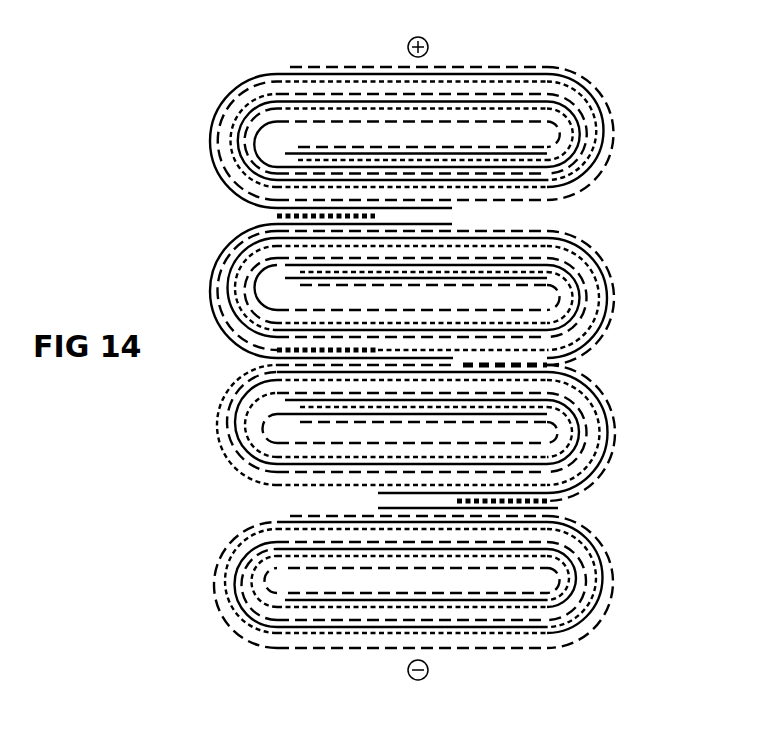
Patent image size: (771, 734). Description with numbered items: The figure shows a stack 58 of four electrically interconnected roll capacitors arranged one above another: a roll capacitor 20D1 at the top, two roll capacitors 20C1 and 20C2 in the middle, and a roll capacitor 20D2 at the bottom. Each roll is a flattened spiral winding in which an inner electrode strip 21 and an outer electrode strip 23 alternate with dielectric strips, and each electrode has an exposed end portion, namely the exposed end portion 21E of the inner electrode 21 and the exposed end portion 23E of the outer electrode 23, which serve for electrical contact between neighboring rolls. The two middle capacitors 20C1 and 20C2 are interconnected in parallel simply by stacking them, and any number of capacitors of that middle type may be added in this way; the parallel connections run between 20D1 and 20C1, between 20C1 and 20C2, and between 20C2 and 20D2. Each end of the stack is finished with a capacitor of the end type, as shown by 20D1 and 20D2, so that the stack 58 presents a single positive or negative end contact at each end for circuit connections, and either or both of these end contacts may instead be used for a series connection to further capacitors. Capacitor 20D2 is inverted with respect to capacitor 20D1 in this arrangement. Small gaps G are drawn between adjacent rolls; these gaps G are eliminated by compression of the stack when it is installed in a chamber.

The stack 58 is at (443, 360).
The roll capacitor 20D1 is at (633, 112).
The roll capacitor 20C1 is at (633, 275).
The roll capacitor 20C2 is at (633, 412).
The roll capacitor 20D2 is at (633, 546).
The inner electrode strip 21 is at (230, 118).
The exposed end portion of inner electrode 21E is at (347, 66).
The outer electrode strip 23 is at (533, 87).
The exposed end portion of outer electrode 23E is at (226, 278).
The gap G is at (550, 214).